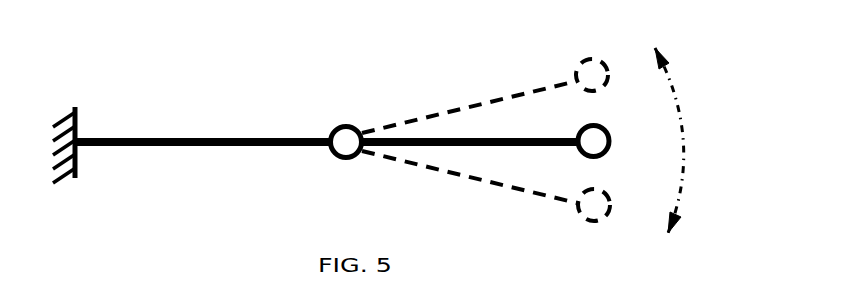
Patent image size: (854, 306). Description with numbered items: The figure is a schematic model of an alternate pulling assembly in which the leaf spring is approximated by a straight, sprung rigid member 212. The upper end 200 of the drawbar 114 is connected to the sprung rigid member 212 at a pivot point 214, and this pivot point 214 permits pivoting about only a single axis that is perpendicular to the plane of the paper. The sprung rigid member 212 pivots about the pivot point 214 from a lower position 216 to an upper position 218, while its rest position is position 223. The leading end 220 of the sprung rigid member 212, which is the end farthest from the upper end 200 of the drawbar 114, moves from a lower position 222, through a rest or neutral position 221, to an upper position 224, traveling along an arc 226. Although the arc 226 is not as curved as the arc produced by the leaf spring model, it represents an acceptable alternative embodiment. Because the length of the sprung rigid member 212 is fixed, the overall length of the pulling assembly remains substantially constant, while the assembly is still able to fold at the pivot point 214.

The drawbar 114 is at (103, 147).
The upper end of the drawbar 200 is at (172, 138).
The pivot point 214 is at (350, 128).
The sprung rigid member 212 is at (508, 142).
The rest position 223 is at (555, 150).
The upper position 218 is at (493, 100).
The lower position 216 is at (520, 187).
The upper position 224 is at (595, 58).
The lower position 222 is at (602, 192).
The leading end 220 is at (602, 117).
The rest or neutral position 221 is at (610, 137).
The arc 226 is at (682, 103).